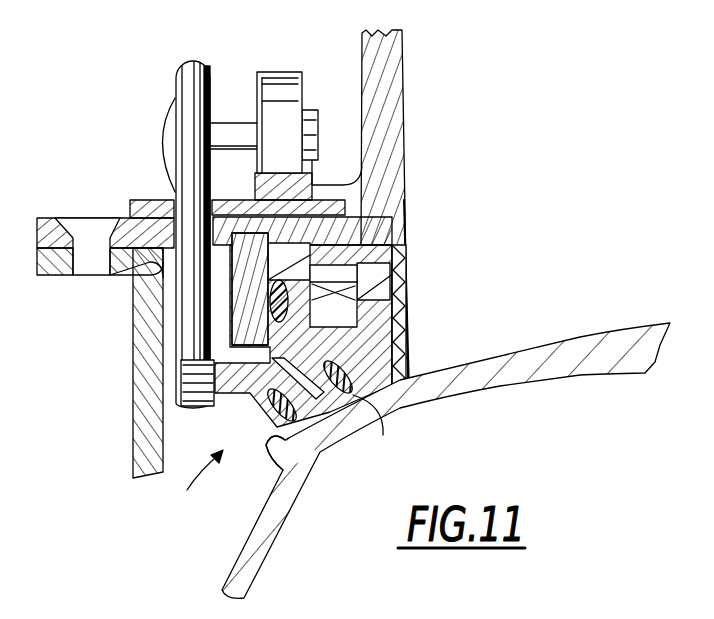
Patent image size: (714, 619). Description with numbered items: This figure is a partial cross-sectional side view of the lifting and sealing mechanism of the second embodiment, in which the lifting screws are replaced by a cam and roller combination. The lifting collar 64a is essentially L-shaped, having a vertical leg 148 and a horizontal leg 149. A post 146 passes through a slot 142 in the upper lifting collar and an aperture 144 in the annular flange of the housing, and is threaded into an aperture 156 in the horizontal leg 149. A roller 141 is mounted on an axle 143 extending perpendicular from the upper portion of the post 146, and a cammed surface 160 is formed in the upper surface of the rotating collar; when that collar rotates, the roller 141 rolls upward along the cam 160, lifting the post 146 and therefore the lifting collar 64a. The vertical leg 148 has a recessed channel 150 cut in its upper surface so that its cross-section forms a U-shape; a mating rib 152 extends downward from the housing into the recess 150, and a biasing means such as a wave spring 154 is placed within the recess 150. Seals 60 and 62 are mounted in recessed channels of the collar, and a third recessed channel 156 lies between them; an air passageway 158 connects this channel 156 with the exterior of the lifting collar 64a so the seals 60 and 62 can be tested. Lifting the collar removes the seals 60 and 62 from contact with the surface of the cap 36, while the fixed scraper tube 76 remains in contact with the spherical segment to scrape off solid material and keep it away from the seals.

The cap 36 is at (531, 344).
The seal 60 is at (264, 429).
The seal 62 is at (383, 420).
The lifting collar 64a is at (189, 486).
The scraper tube 76 is at (408, 293).
The roller 141 is at (292, 72).
The slot 142 is at (176, 200).
The axle 143 is at (230, 123).
The aperture 144 is at (165, 250).
The post 146 is at (201, 63).
The vertical leg 148 is at (373, 335).
The horizontal leg 149 is at (135, 425).
The recessed channel 150 is at (405, 264).
The mating rib 152 is at (270, 265).
The wave spring 154 is at (333, 280).
The aperture / third recessed channel 156 is at (180, 372).
The air passageway 158 is at (312, 356).
The cammed surface 160 is at (312, 187).